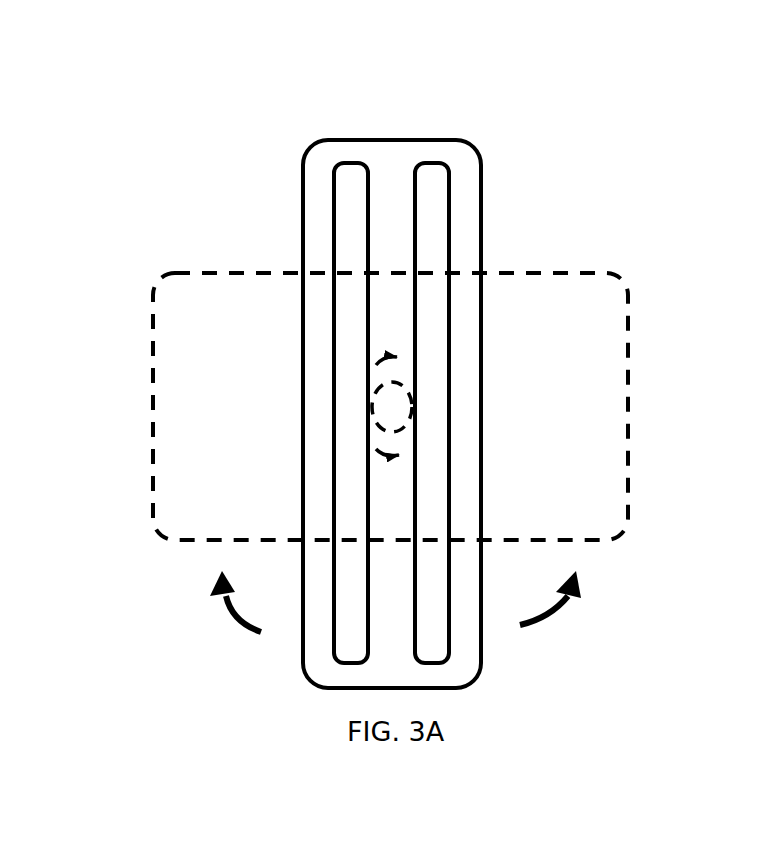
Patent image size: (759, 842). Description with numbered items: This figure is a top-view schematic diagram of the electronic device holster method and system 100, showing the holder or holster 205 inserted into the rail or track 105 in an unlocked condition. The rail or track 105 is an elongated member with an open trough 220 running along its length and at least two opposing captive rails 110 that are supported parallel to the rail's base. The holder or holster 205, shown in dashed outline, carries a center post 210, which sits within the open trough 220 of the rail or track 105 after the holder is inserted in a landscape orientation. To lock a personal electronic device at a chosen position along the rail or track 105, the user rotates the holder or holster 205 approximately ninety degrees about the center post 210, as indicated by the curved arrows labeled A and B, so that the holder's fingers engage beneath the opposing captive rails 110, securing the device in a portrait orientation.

The electronic device holster method and system 100 is at (738, 156).
The rail or track 105 is at (291, 665).
The opposing captive rails 110 is at (381, 363).
The holder or holster 205 is at (220, 264).
The center post 210 is at (397, 403).
The open trough 220 is at (390, 229).